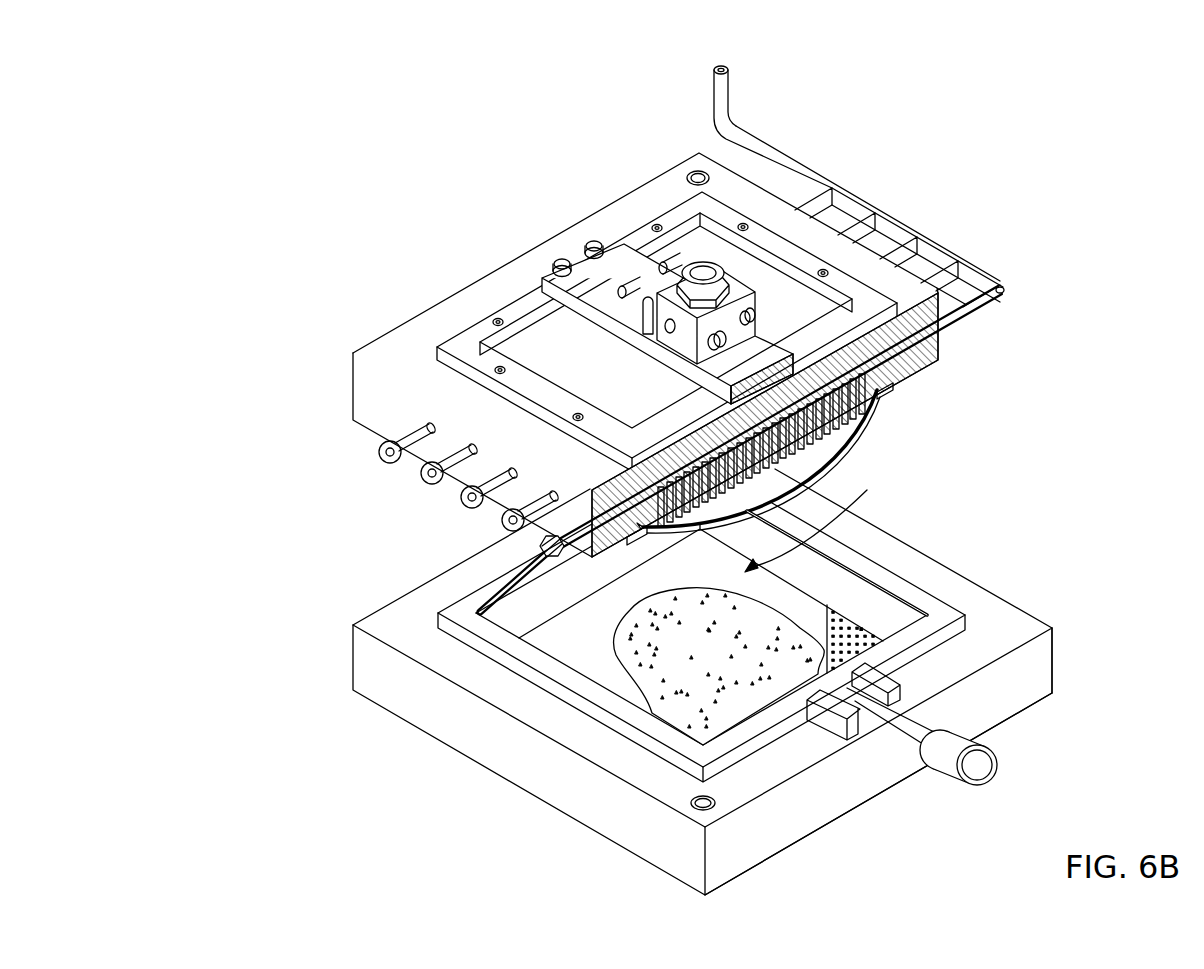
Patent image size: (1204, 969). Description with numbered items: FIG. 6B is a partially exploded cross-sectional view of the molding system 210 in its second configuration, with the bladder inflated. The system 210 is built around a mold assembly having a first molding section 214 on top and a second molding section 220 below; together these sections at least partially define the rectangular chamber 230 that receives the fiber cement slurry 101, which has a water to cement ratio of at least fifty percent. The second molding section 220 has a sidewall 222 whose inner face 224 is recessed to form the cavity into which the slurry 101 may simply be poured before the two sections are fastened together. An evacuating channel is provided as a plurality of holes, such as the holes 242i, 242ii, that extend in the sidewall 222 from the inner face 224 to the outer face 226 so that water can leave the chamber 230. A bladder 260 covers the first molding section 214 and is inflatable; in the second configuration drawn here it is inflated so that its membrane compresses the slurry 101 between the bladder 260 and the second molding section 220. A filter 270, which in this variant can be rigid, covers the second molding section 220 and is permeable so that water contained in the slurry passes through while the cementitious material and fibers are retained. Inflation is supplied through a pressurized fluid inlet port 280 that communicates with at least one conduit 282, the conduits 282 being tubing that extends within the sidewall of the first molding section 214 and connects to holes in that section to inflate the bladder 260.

The system 210 is at (246, 117).
The first molding section 214 is at (370, 395).
The second molding section 220 is at (370, 668).
The sidewall 222 is at (1020, 699).
The inner face 224 is at (812, 605).
The outer face 226 is at (851, 812).
The chamber 230 is at (838, 527).
The hole 242i is at (836, 624).
The hole 242ii is at (852, 644).
The bladder 260 is at (854, 436).
The filter 270 is at (812, 624).
The pressurized fluid inlet port 280 is at (725, 63).
The conduit 282 is at (1004, 289).
The fiber cement slurry 101 is at (640, 653).